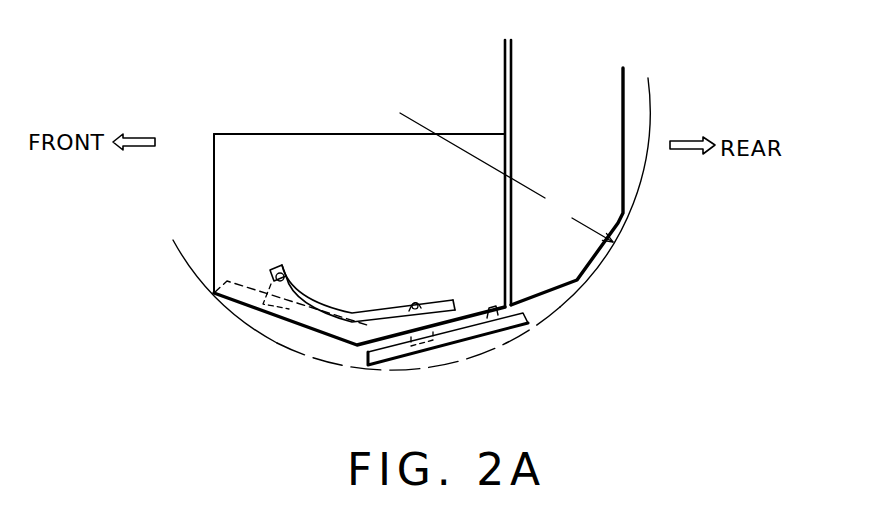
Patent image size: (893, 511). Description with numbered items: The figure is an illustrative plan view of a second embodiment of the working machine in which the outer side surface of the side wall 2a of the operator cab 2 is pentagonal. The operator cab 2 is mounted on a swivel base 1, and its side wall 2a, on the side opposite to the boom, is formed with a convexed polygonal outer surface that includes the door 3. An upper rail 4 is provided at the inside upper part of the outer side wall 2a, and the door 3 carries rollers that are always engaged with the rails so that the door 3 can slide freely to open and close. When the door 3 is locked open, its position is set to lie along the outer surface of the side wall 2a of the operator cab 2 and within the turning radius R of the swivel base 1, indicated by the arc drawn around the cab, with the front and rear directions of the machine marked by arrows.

The swivel base 1 is at (197, 248).
The operator cab 2 is at (275, 150).
The side wall 2a is at (213, 295).
The door 3 is at (393, 352).
The upper rail 4 is at (296, 295).
The turning radius R is at (506, 177).